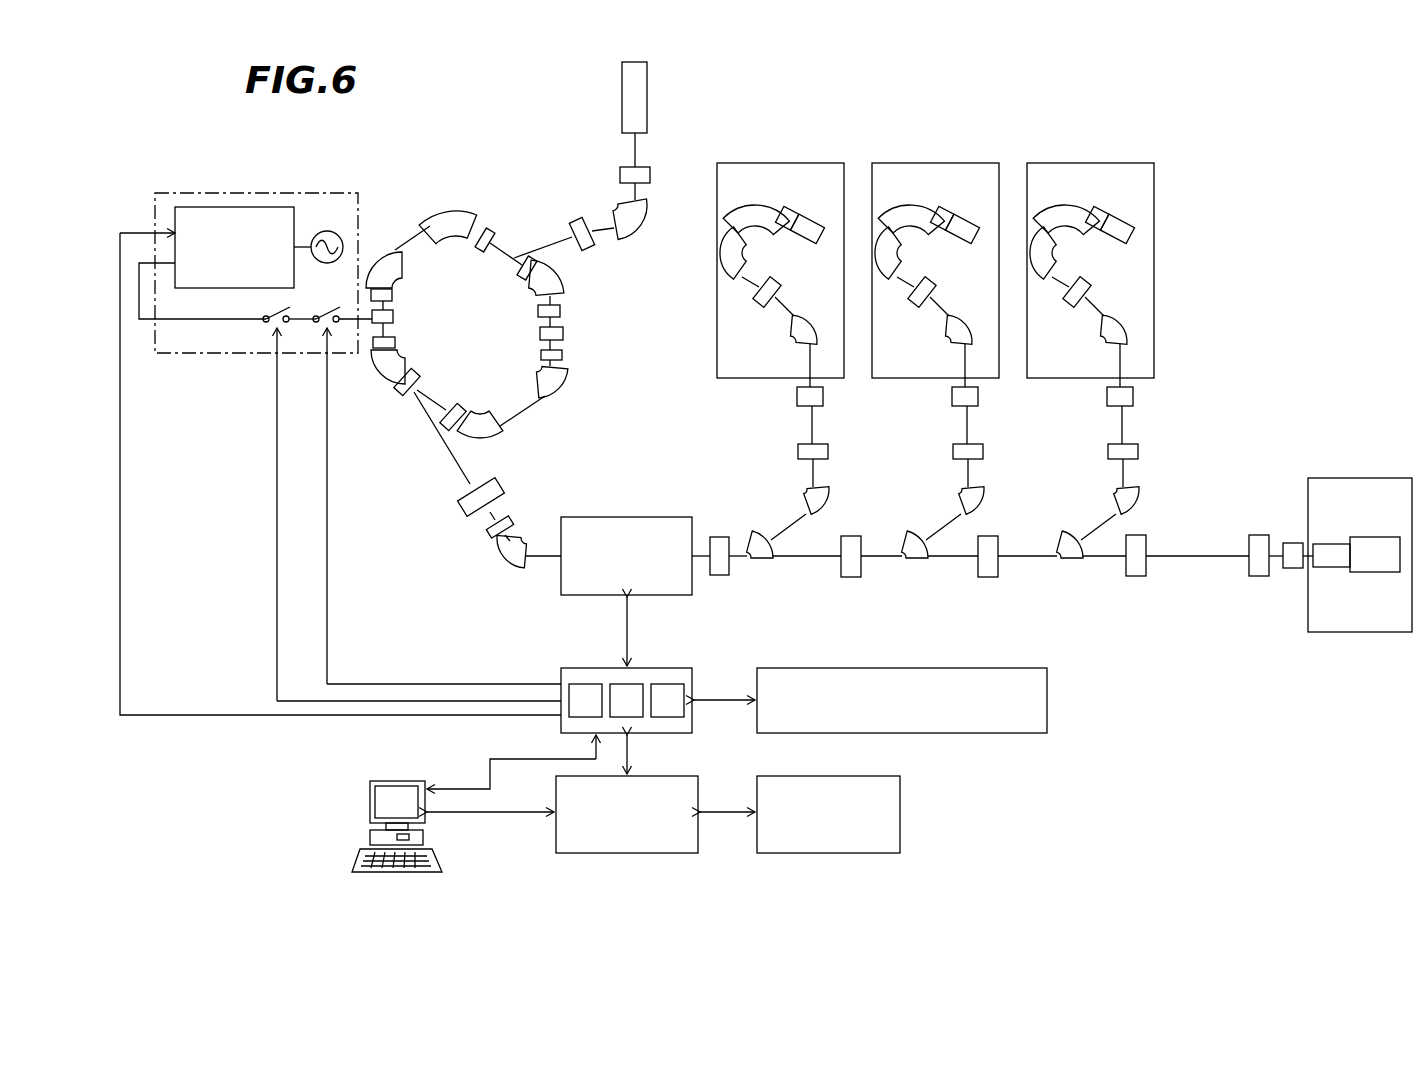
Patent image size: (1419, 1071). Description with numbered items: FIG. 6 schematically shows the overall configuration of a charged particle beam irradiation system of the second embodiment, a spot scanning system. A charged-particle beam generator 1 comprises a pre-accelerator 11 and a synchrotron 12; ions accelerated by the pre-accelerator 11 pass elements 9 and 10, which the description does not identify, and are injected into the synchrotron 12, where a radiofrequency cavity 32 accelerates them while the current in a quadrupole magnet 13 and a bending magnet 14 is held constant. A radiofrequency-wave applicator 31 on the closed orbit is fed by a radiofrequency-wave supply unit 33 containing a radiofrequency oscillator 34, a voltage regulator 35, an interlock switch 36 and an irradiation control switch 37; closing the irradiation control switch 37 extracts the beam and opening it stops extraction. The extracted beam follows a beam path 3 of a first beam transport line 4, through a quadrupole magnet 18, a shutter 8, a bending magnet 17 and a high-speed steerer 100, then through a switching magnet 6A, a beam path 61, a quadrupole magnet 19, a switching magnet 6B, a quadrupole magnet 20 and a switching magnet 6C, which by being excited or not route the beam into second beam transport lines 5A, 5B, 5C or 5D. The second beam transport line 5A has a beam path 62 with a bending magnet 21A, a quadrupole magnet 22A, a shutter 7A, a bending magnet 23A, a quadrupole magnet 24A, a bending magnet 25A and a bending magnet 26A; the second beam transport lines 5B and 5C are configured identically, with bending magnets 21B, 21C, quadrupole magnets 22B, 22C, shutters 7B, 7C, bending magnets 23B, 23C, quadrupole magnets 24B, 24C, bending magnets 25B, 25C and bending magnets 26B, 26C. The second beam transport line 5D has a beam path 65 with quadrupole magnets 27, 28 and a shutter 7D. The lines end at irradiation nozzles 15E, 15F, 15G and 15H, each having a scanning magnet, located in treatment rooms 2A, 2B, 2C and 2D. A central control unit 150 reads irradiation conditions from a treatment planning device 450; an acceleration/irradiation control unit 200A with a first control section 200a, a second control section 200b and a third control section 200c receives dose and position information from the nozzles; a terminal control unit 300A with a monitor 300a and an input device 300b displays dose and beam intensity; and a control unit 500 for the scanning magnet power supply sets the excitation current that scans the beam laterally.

The charged-particle beam generator 1 is at (540, 170).
The beam path 3 is at (447, 459).
The first beam transport line 4 is at (546, 570).
The second beam transport line 5A is at (798, 433).
The second beam transport line 5B is at (933, 423).
The second beam transport line 5C is at (1088, 423).
The second beam transport line 5D is at (1219, 545).
The switching magnet 6A is at (757, 560).
The switching magnet 6B is at (917, 564).
The switching magnet 6C is at (1072, 564).
The shutter 7A is at (823, 398).
The shutter 7B is at (986, 398).
The shutter 7C is at (1141, 398).
The shutter 7D is at (1293, 568).
The shutter 8 is at (484, 540).
The quadrupole magnet (injection) 9 is at (620, 176).
The injection bending magnet 10 is at (636, 229).
The pre-accelerator 11 is at (647, 85).
The synchrotron 12 is at (499, 324).
The quadrupole magnet 13 is at (405, 360).
The bending magnet 14 is at (398, 270).
The irradiation nozzle 15E is at (813, 240).
The irradiation nozzle 15F is at (961, 239).
The irradiation nozzle 15G is at (1118, 239).
The irradiation nozzle 15H is at (1372, 572).
The bending magnet 17 is at (506, 567).
The quadrupole magnet 18 is at (502, 489).
The quadrupole magnet 19 is at (851, 577).
The quadrupole magnet 20 is at (988, 577).
The bending magnet 21A is at (802, 497).
The bending magnet 21B is at (945, 500).
The bending magnet 21C is at (1100, 500).
The quadrupole magnet 22A is at (828, 452).
The quadrupole magnet 22B is at (997, 455).
The quadrupole magnet 22C is at (1152, 455).
The bending magnet 23A is at (786, 340).
The bending magnet 23B is at (930, 334).
The bending magnet 23C is at (1085, 334).
The quadrupole magnet 24A is at (781, 298).
The quadrupole magnet 24B is at (950, 293).
The quadrupole magnet 24C is at (1105, 293).
The bending magnet 25A is at (744, 252).
The bending magnet 25B is at (911, 253).
The bending magnet 25C is at (1066, 253).
The bending magnet 26A is at (738, 218).
The bending magnet 26B is at (911, 185).
The bending magnet 26C is at (1066, 185).
The quadrupole magnet 27 is at (1136, 577).
The quadrupole magnet 28 is at (1259, 577).
The radiofrequency-wave applicator 31 is at (395, 316).
The radiofrequency cavity 32 is at (538, 334).
The radiofrequency-wave supply unit 33 is at (305, 193).
The radiofrequency oscillator 34 is at (340, 236).
The voltage regulator 35 is at (238, 207).
The interlock switch 36 is at (259, 333).
The irradiation control switch 37 is at (309, 333).
The beam path 61 is at (877, 558).
The beam path 62 is at (810, 478).
The beam path 65 is at (1196, 558).
The high-speed steerer 100 is at (627, 517).
The central control unit 150 is at (625, 853).
The acceleration/irradiation control unit 200A is at (650, 700).
The first control section 200a is at (585, 684).
The second control section 200b is at (636, 717).
The third control section 200c is at (677, 717).
The treatment room 2A is at (803, 163).
The treatment room 2B is at (935, 248).
The treatment room 2C is at (1090, 248).
The treatment room 2D is at (1367, 478).
The terminal control unit 300A is at (356, 806).
The monitor 300a is at (397, 781).
The input device 300b is at (352, 858).
The treatment planning device 450 is at (826, 853).
The control unit for scanning magnet power supply 500 is at (792, 668).